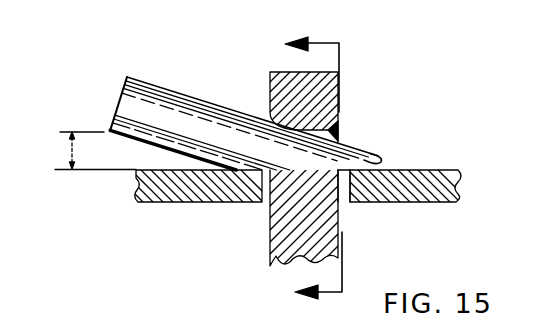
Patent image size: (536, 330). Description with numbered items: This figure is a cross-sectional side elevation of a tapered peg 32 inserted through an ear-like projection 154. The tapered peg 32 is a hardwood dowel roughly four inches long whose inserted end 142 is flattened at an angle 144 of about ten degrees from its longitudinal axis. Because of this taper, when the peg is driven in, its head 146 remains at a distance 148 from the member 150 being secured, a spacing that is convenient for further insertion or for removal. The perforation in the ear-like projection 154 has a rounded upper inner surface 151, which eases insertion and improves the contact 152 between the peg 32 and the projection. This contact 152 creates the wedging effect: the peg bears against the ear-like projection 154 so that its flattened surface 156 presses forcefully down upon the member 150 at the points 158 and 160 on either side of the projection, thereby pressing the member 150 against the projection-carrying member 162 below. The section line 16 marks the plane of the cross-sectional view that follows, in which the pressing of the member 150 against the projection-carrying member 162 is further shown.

The section line 16 is at (314, 165).
The tapered peg 32 is at (268, 101).
The inserted end 142 is at (378, 152).
The angle 144 is at (133, 153).
The head 146 is at (133, 77).
The distance 148 is at (61, 152).
The member 150 is at (430, 171).
The rounded upper inner surface 151 is at (339, 125).
The contact 152 is at (272, 134).
The ear-like projection 154 is at (292, 72).
The flattened surface 156 is at (332, 167).
The bearing point 158 is at (243, 192).
The bearing point 160 is at (353, 203).
The projection-carrying member 162 is at (271, 262).